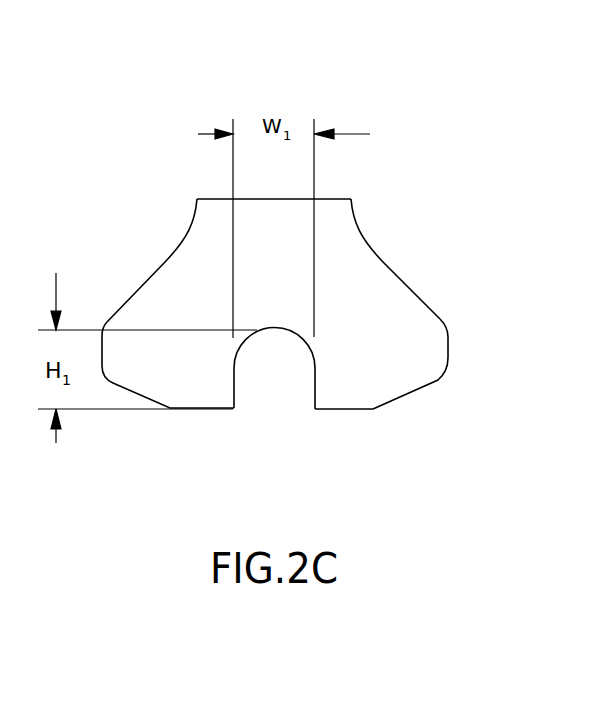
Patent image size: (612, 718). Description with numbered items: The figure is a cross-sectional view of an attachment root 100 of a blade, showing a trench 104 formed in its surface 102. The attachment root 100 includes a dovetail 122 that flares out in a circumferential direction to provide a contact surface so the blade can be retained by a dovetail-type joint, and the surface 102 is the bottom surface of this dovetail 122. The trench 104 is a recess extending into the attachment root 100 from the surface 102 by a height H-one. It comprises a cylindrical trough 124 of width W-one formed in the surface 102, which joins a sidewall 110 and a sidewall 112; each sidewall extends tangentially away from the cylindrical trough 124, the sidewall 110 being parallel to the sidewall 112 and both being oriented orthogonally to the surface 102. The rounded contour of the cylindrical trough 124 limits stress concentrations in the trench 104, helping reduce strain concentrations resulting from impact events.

The attachment root 100 is at (122, 108).
The surface 102 is at (187, 409).
The trench 104 is at (298, 369).
The sidewall 110 is at (235, 397).
The sidewall 112 is at (315, 391).
The dovetail 122 is at (452, 352).
The cylindrical trough 124 is at (280, 327).